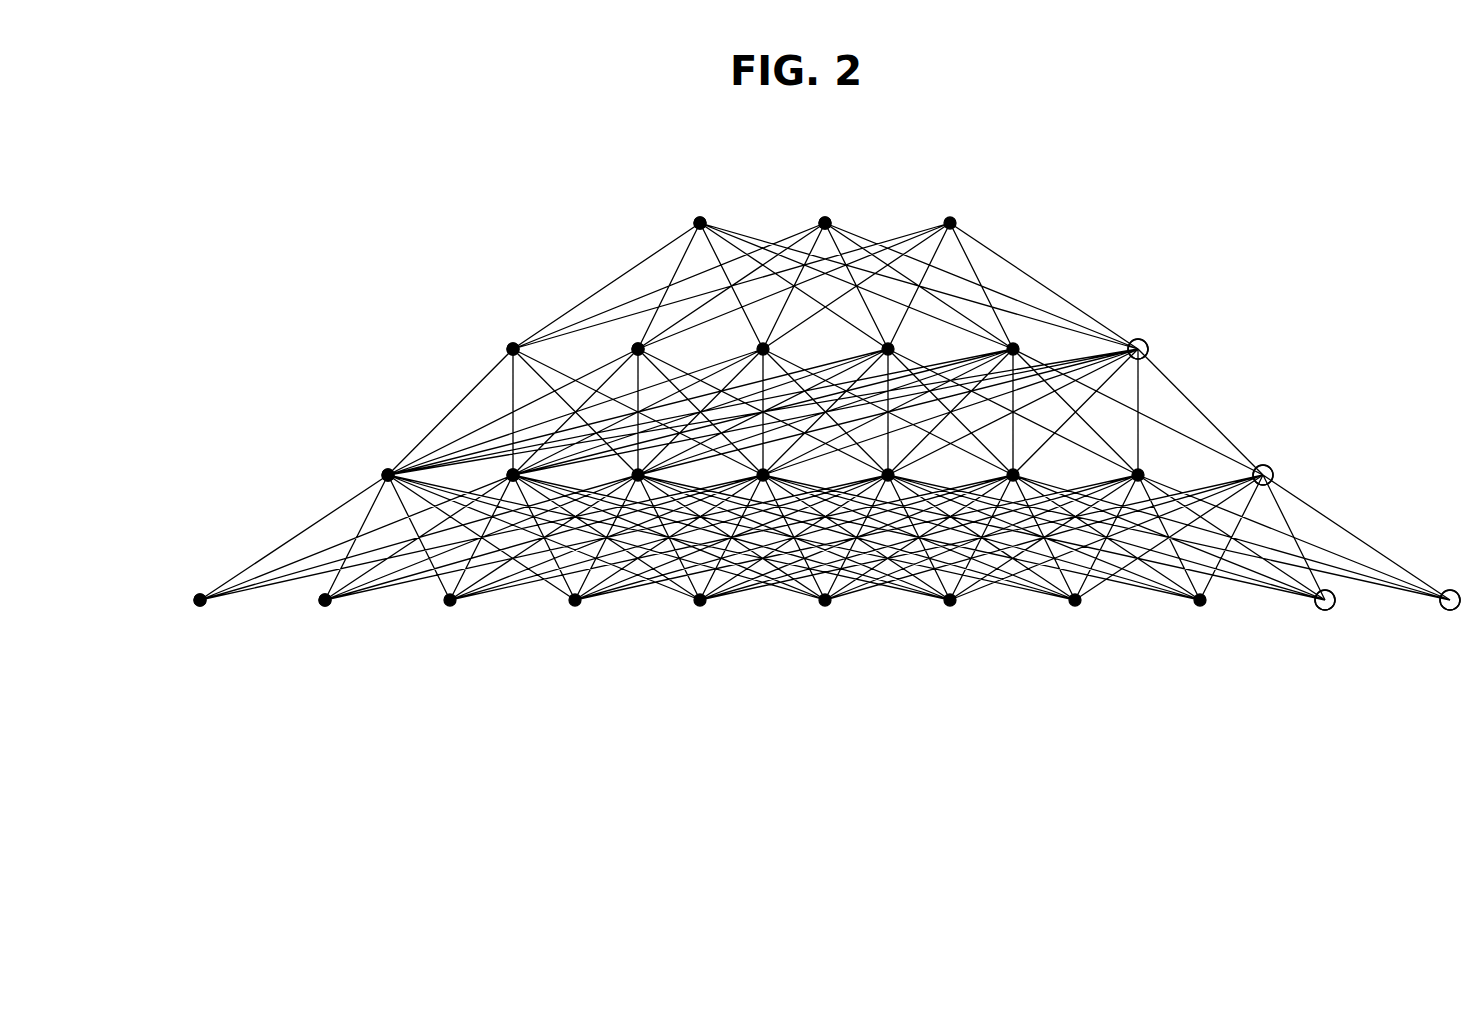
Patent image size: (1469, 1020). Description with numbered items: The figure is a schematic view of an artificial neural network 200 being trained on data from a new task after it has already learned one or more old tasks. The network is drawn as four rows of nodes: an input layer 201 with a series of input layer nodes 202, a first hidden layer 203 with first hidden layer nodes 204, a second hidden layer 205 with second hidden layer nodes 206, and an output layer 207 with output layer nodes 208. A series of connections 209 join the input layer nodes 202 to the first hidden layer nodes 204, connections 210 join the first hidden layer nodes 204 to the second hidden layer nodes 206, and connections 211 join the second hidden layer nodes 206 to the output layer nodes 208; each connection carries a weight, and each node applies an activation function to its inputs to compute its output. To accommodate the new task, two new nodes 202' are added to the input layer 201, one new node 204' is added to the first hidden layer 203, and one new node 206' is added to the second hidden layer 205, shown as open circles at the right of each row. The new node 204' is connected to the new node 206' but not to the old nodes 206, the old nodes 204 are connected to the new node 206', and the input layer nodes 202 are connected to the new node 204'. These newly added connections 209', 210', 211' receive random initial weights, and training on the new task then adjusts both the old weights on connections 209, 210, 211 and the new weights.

The artificial neural network 200 is at (485, 180).
The input layer 201 is at (189, 562).
The input layer nodes 202 is at (244, 644).
The first hidden layer 203 is at (312, 440).
The first hidden layer nodes 204 is at (402, 437).
The second hidden layer 205 is at (464, 313).
The second hidden layer nodes 206 is at (521, 304).
The output layer 207 is at (639, 187).
The output layer nodes 208 is at (700, 223).
The connections 209 is at (825, 585).
The connections 210 is at (825, 420).
The connections 211 is at (830, 275).
The new nodes 202' is at (1341, 640).
The new node 204' is at (1317, 456).
The new node 206' is at (1192, 330).
The newly added connections 209' is at (1262, 563).
The newly added connections 210' is at (1216, 412).
The newly added connections 211' is at (1092, 286).